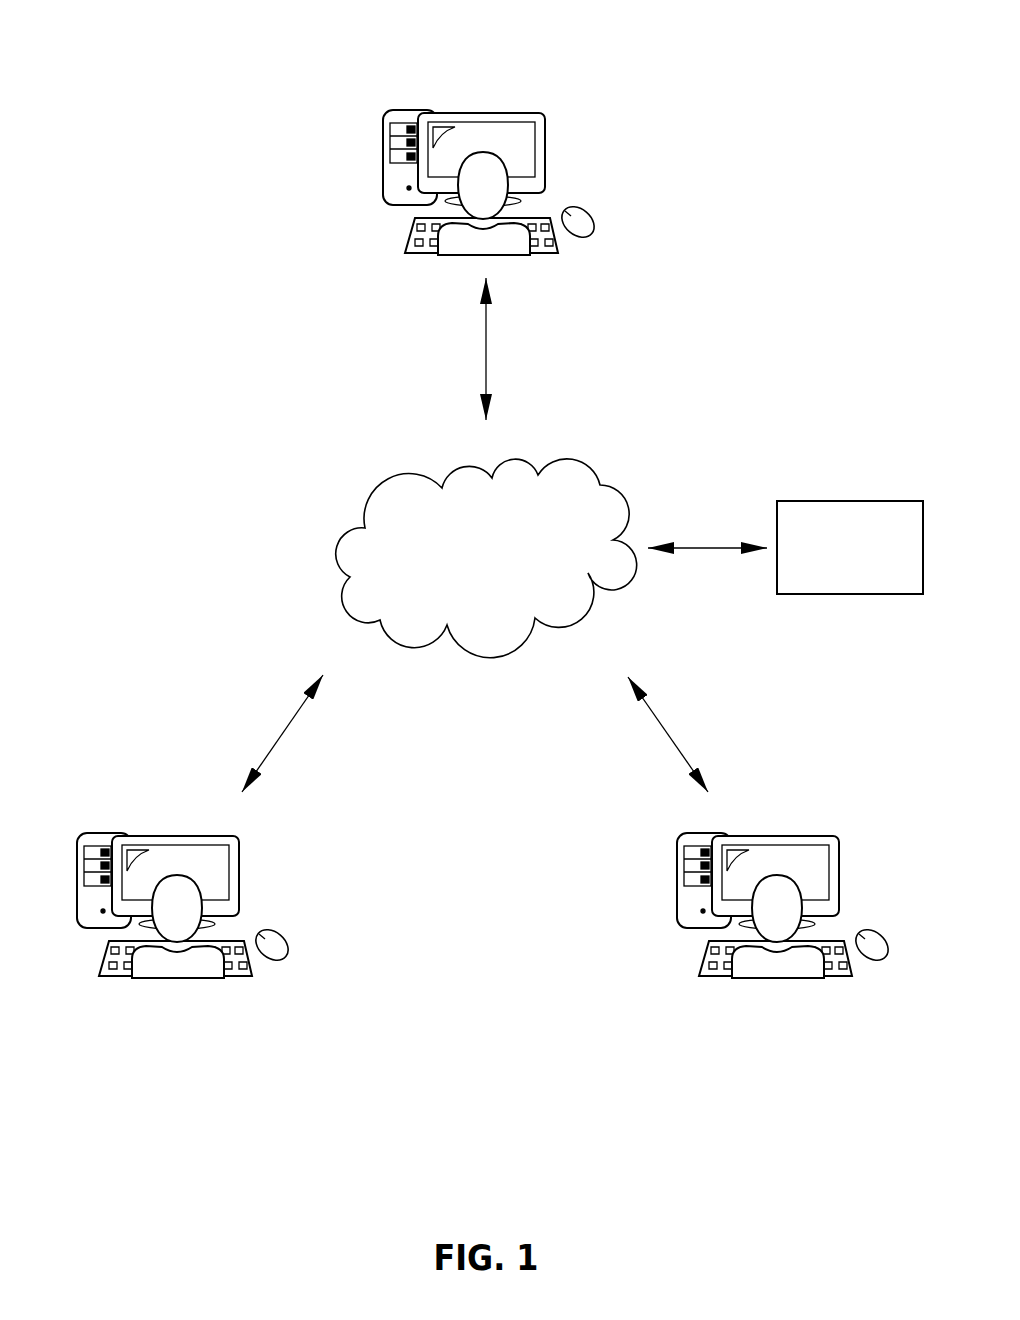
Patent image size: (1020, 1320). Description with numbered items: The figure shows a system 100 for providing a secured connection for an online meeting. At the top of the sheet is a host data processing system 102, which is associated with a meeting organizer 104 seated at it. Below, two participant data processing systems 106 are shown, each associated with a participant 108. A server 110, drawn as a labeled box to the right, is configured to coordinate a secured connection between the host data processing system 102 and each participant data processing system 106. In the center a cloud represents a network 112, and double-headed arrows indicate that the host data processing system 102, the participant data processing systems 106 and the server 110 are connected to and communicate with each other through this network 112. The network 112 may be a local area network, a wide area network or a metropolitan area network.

The system 100 is at (473, 529).
The host data processing system 102 is at (442, 152).
The meeting organizer 104 is at (454, 242).
The participant data processing system 106 is at (458, 930).
The participant 108 is at (462, 966).
The server 110 is at (827, 576).
The network 112 is at (466, 569).